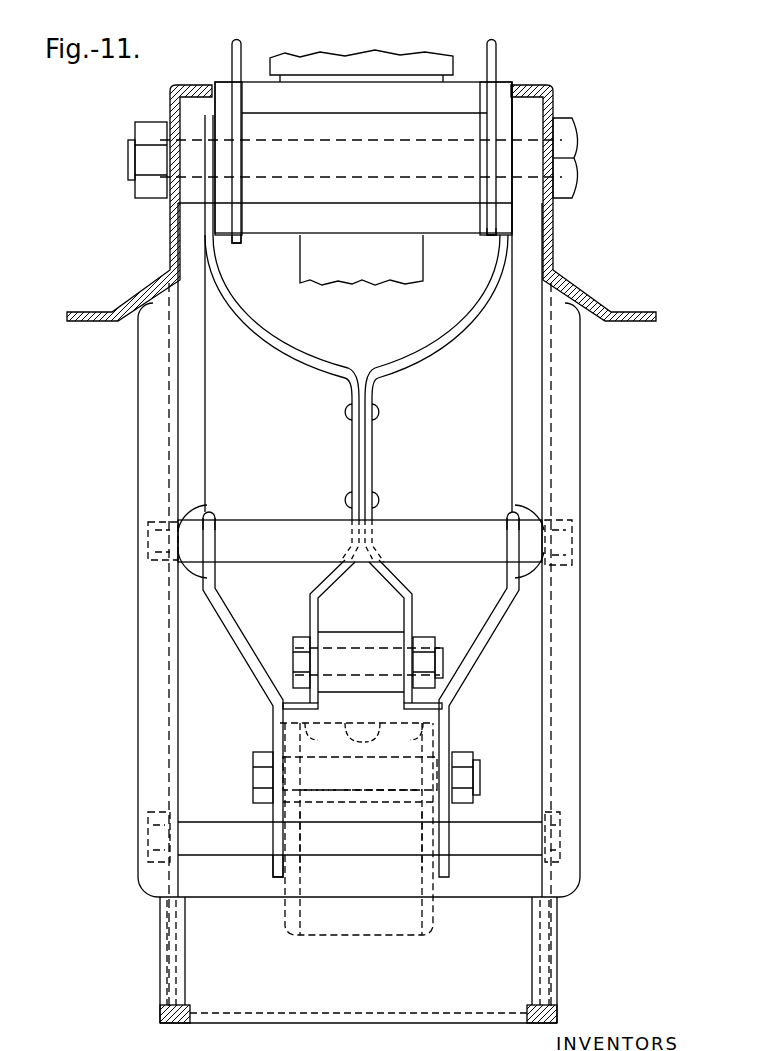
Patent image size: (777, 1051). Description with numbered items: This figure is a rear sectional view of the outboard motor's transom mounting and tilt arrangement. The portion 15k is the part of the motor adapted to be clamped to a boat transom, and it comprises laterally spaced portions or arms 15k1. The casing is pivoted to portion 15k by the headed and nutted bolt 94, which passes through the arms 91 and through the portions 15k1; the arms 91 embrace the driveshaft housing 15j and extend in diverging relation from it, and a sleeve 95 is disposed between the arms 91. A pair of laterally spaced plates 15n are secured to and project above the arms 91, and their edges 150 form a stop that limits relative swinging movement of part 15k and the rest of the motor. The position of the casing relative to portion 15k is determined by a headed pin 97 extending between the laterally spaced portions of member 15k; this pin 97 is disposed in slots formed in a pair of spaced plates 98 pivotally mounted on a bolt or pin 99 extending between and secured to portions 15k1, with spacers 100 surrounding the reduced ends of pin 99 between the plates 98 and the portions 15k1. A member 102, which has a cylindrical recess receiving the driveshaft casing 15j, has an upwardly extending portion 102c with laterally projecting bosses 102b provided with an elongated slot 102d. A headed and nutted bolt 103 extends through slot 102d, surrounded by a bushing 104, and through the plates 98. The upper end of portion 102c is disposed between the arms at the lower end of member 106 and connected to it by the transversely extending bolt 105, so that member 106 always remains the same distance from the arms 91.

The portion 15k is at (515, 956).
The laterally spaced portions 15k1 is at (170, 262).
The driveshaft housing 15j is at (362, 276).
The laterally spaced plates 15n is at (238, 232).
The pin 150 is at (233, 68).
The arms 91 is at (228, 238).
The headed and nutted bolt 94 is at (128, 160).
The sleeve 95 is at (322, 190).
The headed pin 97 is at (512, 845).
The spaced plates 98 is at (247, 672).
The bolt or pin 99 is at (416, 522).
The spacers 100 is at (210, 517).
The member 102 is at (283, 883).
The laterally projecting bosses 102b is at (288, 702).
The upwardly extending portion 102c is at (360, 614).
The elongated slot 102d is at (366, 723).
The headed and nutted bolt 103 is at (481, 773).
The bushing 104 is at (448, 748).
The transversely extending bolt 105 is at (443, 655).
The member 106 is at (303, 364).